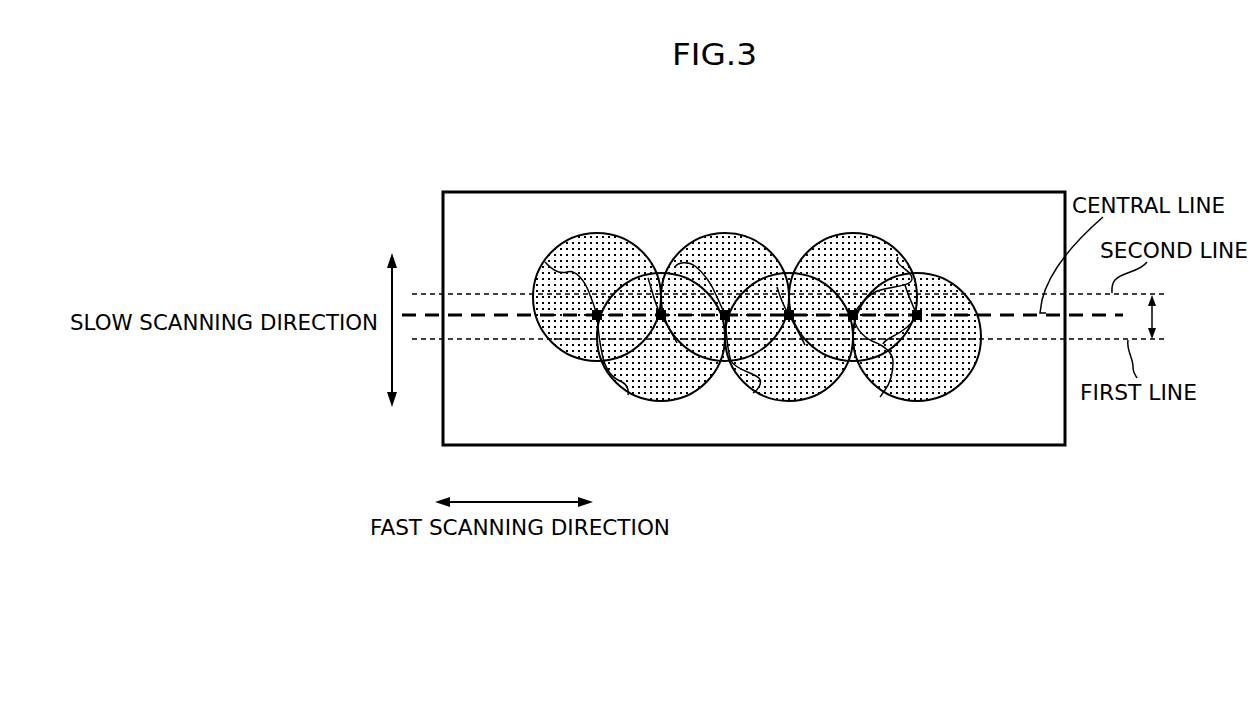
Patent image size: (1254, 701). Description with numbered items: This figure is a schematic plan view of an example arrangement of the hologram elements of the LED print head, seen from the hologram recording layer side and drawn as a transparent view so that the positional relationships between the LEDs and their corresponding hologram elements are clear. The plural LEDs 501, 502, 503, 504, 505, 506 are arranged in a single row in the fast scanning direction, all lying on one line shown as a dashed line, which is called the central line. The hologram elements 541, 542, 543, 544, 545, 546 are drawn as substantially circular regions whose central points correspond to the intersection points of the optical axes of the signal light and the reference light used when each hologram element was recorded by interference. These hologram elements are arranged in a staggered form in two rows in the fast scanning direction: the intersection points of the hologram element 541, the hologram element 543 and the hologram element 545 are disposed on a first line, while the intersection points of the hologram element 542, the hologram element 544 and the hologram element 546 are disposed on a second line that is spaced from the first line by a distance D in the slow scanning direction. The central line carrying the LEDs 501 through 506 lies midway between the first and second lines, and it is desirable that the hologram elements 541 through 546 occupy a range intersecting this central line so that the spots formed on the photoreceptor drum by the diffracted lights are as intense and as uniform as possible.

The LED 501 is at (880, 397).
The LED 502 is at (898, 257).
The LED 503 is at (753, 395).
The LED 504 is at (675, 267).
The LED 505 is at (628, 395).
The LED 506 is at (545, 262).
The hologram element 541 is at (920, 401).
The hologram element 542 is at (860, 233).
The hologram element 543 is at (787, 401).
The hologram element 544 is at (721, 233).
The hologram element 545 is at (657, 401).
The hologram element 546 is at (590, 233).
The distance D is at (1167, 317).